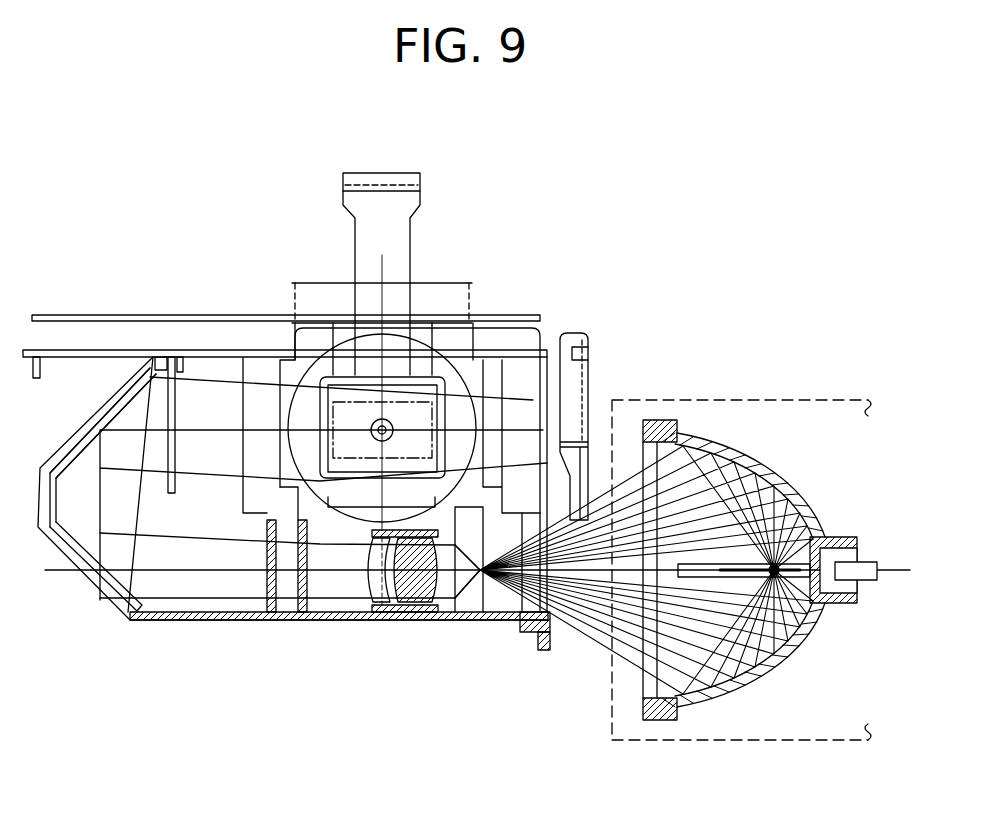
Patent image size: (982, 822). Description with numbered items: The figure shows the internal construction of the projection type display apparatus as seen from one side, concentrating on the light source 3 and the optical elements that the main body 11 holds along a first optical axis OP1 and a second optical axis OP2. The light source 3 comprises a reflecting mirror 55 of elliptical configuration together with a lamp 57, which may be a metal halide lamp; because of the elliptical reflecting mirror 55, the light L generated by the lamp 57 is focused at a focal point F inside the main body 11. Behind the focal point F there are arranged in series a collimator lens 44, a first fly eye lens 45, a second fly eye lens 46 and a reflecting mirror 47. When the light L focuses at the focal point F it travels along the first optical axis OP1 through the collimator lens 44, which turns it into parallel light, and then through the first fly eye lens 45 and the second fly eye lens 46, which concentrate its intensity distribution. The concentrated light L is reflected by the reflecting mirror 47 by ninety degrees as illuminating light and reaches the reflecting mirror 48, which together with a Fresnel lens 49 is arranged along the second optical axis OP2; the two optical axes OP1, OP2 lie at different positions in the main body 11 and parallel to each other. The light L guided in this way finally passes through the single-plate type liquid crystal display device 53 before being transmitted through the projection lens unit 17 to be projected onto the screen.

The light source 3 is at (678, 570).
The main body 11 is at (453, 620).
The projection lens unit 17 is at (410, 345).
The collimator lens 44 is at (438, 627).
The first fly eye lens 45 is at (306, 620).
The second fly eye lens 46 is at (273, 618).
The reflecting mirror 47 is at (83, 548).
The reflecting mirror 48 is at (45, 458).
The Fresnel lens 49 is at (178, 410).
The single-plate type liquid crystal display device 53 is at (450, 428).
The reflecting mirror 55 is at (735, 475).
The lamp 57 is at (765, 605).
The focal point F is at (473, 588).
The light L is at (208, 583).
The first optical axis OP1 is at (347, 572).
The second optical axis OP2 is at (260, 430).